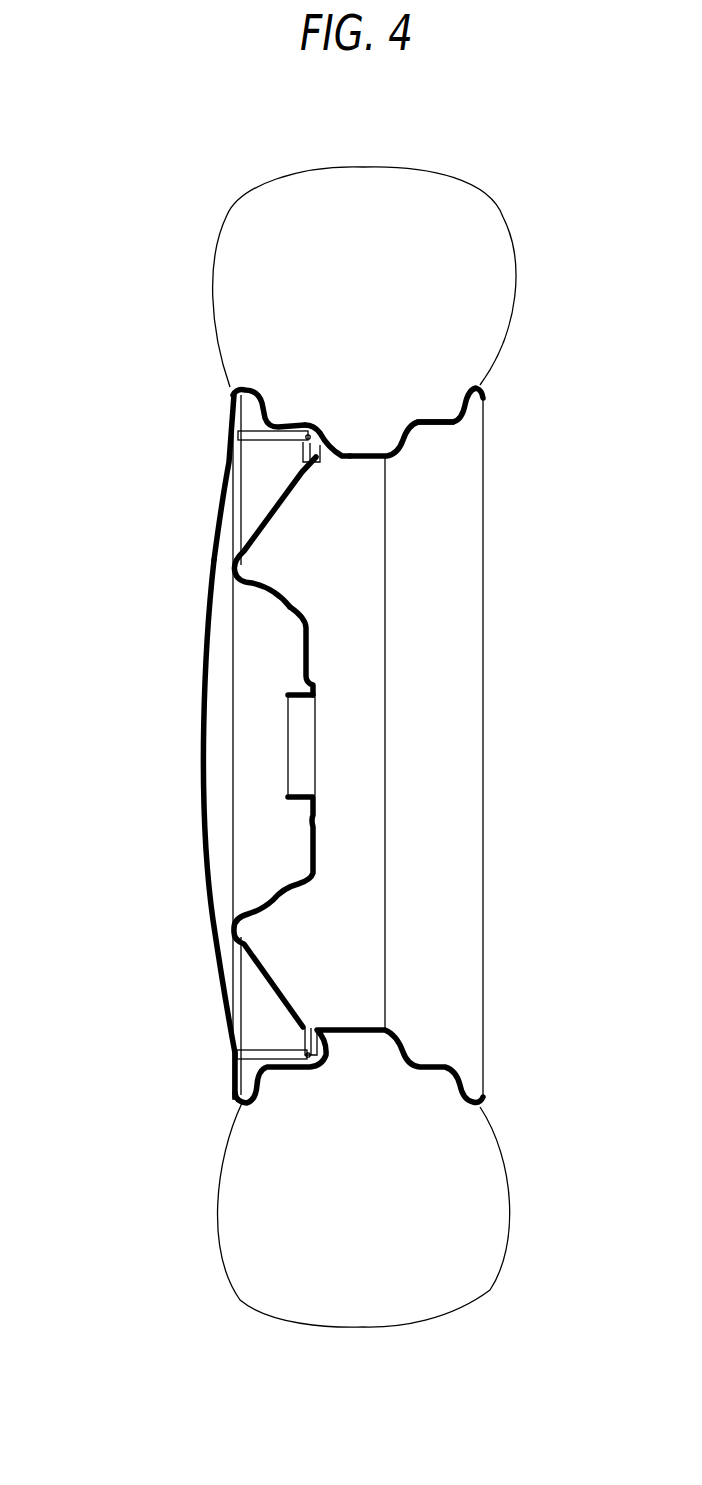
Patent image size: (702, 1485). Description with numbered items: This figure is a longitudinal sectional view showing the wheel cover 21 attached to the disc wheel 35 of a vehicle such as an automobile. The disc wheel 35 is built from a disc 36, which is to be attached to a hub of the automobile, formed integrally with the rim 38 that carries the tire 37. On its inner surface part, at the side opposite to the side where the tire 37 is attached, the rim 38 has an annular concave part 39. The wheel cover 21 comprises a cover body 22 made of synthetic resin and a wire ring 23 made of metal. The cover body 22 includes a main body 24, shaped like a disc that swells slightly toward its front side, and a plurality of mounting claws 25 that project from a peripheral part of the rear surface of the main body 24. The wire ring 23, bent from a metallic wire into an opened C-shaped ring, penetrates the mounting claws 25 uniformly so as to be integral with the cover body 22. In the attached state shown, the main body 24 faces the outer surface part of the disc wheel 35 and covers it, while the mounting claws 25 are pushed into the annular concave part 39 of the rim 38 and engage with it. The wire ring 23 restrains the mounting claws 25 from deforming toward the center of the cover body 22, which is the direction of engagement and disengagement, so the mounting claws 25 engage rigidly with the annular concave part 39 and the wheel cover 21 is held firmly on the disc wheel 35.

The wheel cover 21 is at (180, 694).
The cover body 22 is at (218, 502).
The wire ring 23 is at (299, 478).
The main body 24 is at (207, 627).
The mounting claws 25 is at (320, 463).
The disc wheel 35 is at (485, 718).
The disc 36 is at (307, 618).
The tire 37 is at (227, 213).
The rim 38 is at (422, 421).
The annular concave part 39 is at (327, 438).